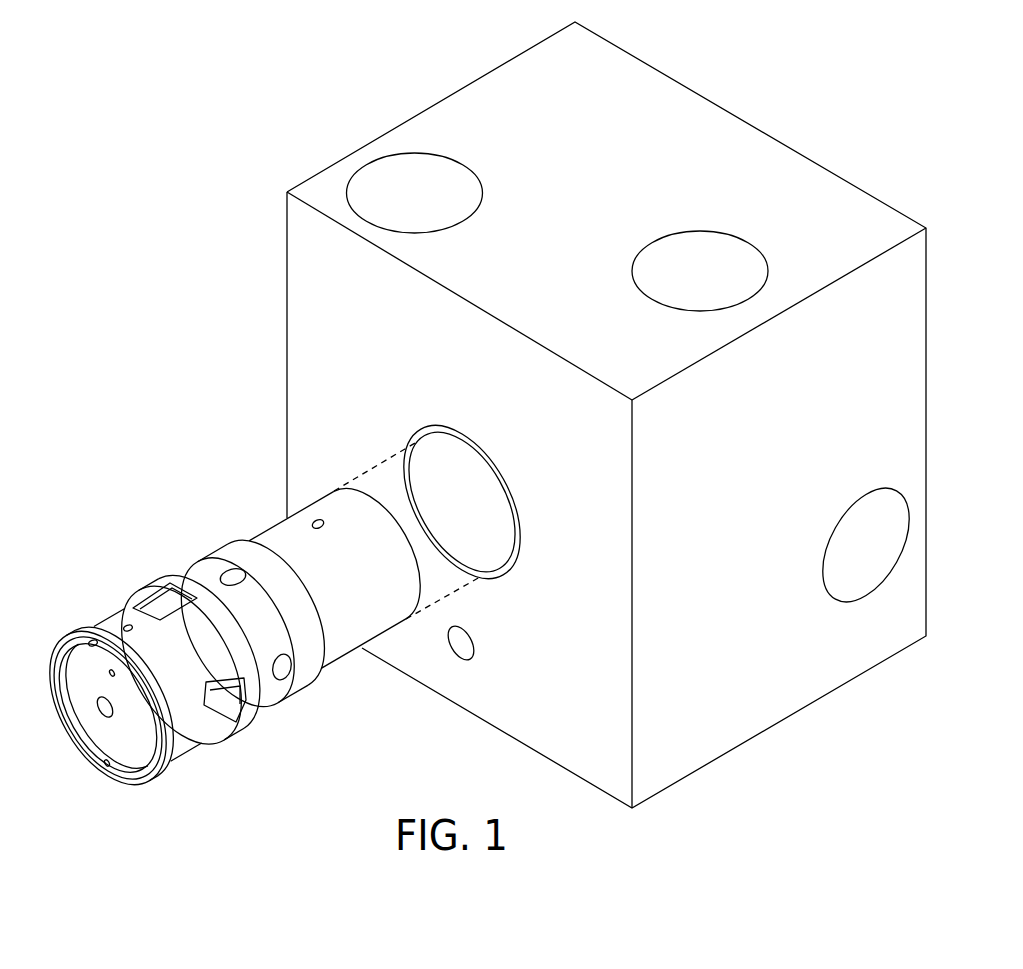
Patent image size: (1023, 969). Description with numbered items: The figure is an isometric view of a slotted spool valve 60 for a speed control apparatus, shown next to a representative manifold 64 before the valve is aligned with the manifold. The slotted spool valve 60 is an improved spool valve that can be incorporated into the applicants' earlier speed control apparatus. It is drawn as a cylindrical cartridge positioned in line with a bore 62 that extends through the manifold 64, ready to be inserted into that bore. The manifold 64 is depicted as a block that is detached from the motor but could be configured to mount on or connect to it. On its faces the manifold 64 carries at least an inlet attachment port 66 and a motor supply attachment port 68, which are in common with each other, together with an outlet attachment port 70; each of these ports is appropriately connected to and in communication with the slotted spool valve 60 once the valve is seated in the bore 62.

The slotted spool valve 60 is at (165, 566).
The bore 62 is at (450, 512).
The manifold 64 is at (750, 116).
The inlet attachment port 66 is at (902, 545).
The motor supply attachment port 68 is at (712, 256).
The outlet attachment port 70 is at (379, 177).